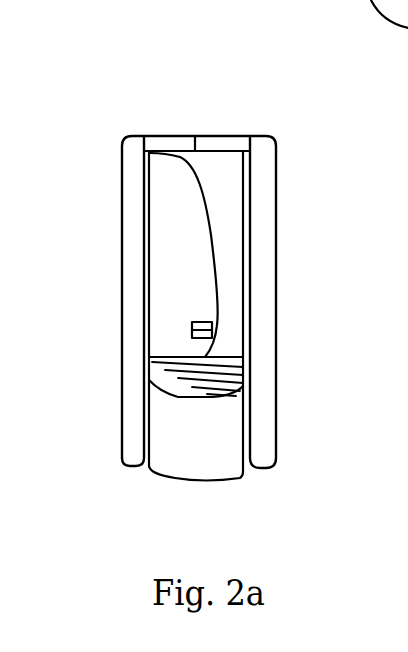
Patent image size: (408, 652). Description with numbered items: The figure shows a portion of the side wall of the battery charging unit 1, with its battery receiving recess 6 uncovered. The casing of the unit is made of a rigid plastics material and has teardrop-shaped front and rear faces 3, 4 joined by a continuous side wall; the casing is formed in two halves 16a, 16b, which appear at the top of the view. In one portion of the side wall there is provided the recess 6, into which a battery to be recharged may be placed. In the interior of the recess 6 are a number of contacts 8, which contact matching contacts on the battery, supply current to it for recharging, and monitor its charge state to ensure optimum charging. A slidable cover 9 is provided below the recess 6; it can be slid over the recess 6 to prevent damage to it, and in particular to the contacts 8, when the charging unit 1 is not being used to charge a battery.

The battery charging unit 1 is at (303, 190).
The front face 3 is at (120, 298).
The rear face 4 is at (278, 311).
The recess 6 is at (158, 212).
The contacts 8 is at (215, 323).
The slidable cover 9 is at (220, 427).
The casing half 16a is at (171, 145).
The casing half 16b is at (220, 147).